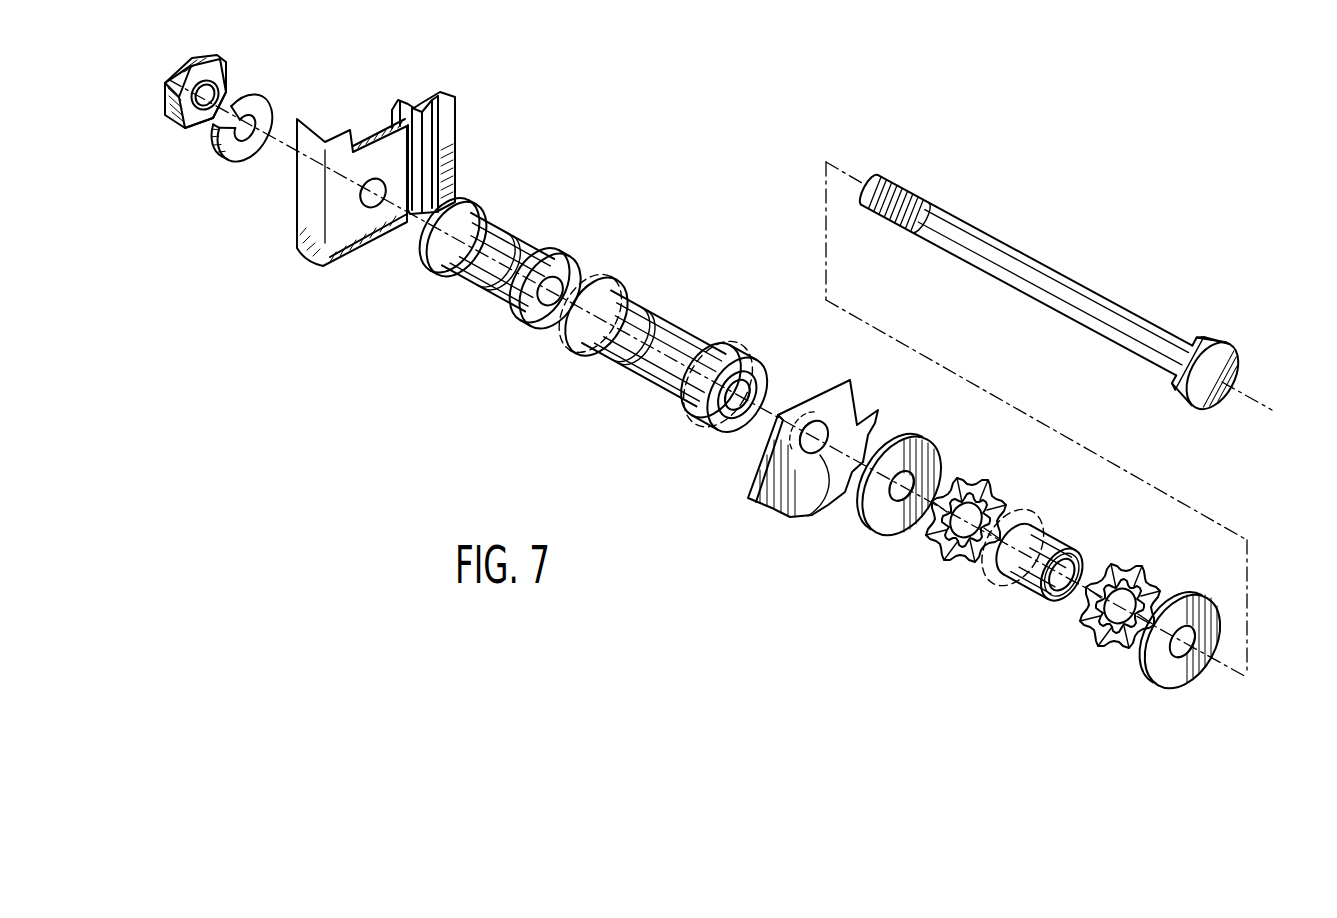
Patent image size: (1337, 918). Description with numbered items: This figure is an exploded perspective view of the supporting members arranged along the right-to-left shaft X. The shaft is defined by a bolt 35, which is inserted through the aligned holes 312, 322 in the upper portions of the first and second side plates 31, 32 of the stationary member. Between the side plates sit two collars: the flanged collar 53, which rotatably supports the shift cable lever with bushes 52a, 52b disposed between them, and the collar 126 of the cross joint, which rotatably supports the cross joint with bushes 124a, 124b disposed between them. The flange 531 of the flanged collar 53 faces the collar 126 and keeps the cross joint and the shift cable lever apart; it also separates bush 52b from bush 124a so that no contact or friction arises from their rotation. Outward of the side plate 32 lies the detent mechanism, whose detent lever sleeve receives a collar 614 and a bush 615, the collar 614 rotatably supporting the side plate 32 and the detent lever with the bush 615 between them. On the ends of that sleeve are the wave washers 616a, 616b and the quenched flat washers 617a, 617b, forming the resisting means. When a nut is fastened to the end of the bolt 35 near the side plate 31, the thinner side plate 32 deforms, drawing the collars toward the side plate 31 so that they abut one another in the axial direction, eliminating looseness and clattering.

The side plate 31 is at (413, 187).
The hole 312 is at (367, 209).
The flanged collar 53 is at (539, 229).
The bush 52a is at (480, 206).
The bush 52b is at (547, 243).
The flange 531 is at (573, 264).
The bush 124a is at (635, 275).
The collar 126 is at (695, 322).
The bush 124b is at (733, 350).
The side plate 32 is at (826, 466).
The hole 322 is at (803, 515).
The flat washer 617a is at (934, 461).
The wave washer 616a is at (996, 486).
The collar 614 is at (1053, 493).
The bush 615 is at (1033, 520).
The wave washer 616b is at (1147, 585).
The flat washer 617b is at (1143, 660).
The bolt 35 is at (1078, 286).
The right-to-left shaft X is at (1250, 388).